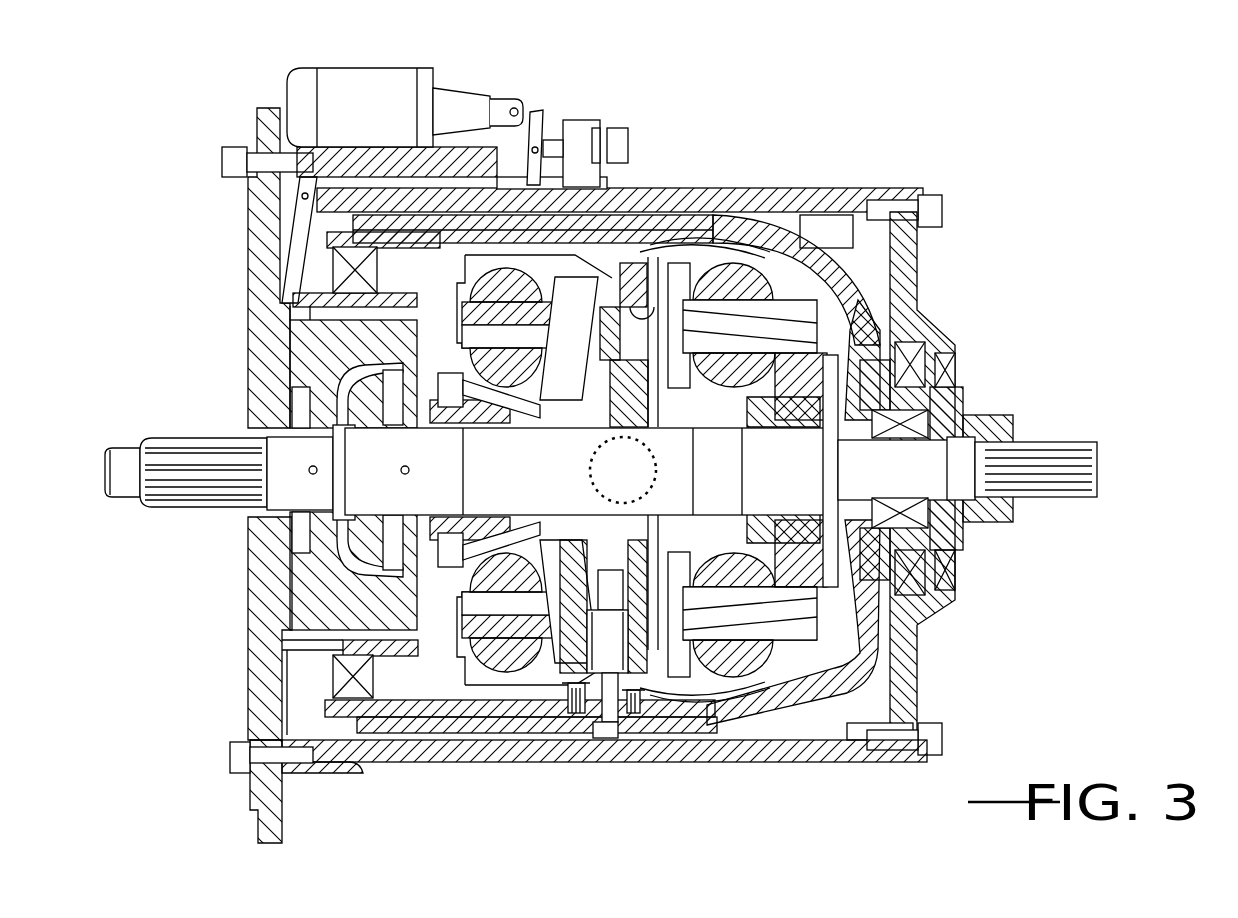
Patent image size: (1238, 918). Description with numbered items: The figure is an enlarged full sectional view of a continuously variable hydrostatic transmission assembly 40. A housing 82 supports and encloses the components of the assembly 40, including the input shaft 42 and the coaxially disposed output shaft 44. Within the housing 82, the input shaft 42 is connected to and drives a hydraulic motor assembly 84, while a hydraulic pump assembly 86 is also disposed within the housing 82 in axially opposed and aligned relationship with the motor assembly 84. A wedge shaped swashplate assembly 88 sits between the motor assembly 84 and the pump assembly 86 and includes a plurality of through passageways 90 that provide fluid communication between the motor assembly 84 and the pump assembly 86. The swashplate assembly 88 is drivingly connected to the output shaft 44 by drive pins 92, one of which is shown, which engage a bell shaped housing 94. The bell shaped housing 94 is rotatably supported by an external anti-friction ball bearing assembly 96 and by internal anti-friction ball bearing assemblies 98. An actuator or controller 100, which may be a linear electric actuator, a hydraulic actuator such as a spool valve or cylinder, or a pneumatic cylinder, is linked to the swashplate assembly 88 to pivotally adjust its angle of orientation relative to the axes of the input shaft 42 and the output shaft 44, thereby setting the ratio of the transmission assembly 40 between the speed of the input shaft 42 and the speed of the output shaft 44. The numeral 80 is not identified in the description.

The continuously variable hydrostatic transmission assembly 40 is at (608, 440).
The input shaft 42 is at (188, 433).
The output shaft 44 is at (1060, 440).
The rotor 80 is at (630, 262).
The housing 82 is at (825, 188).
The hydraulic motor assembly 84 is at (467, 767).
The hydraulic pump assembly 86 is at (705, 772).
The swashplate assembly 88 is at (606, 745).
The through passageways 90 is at (648, 325).
The drive pins 92 is at (590, 720).
The bell shaped housing 94 is at (760, 715).
The ball bearing assembly 96 is at (930, 350).
The ball bearing assemblies 98 is at (338, 267).
The actuator 100 is at (385, 95).